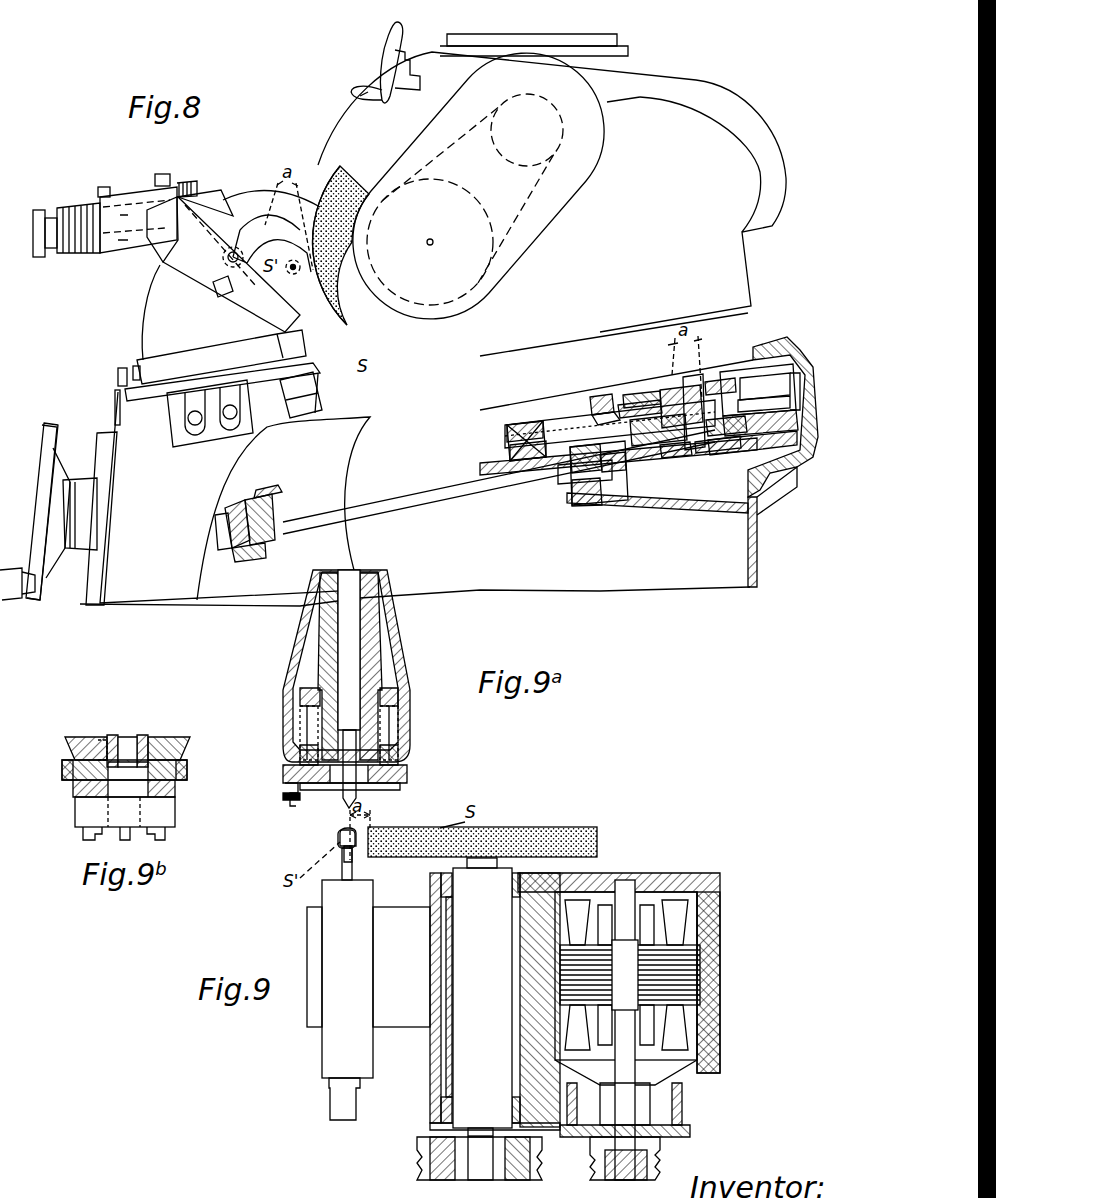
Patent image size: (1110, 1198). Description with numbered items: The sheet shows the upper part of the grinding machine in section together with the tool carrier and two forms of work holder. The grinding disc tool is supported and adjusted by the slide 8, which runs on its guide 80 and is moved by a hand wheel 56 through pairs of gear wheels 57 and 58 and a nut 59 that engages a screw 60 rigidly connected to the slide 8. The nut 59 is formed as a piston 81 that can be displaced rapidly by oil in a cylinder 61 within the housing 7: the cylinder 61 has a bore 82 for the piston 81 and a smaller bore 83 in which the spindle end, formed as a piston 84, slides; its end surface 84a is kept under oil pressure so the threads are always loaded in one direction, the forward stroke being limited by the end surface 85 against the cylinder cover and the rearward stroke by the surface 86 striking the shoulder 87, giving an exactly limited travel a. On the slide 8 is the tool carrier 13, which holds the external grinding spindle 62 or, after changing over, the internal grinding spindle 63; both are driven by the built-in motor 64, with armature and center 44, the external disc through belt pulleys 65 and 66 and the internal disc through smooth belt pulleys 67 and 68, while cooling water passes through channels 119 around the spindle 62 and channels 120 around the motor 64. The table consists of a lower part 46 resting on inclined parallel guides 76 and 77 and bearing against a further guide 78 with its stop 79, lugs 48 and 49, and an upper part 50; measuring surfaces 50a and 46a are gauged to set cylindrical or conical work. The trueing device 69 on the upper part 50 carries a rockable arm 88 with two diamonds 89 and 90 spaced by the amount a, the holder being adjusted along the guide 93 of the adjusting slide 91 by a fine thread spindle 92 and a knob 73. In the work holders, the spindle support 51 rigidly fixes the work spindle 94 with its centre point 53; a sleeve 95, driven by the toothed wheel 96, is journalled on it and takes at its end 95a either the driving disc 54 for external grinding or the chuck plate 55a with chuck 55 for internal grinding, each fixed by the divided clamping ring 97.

In FIG. 8, the spindle tube housing 7 is at (757, 545).
In FIG. 8, the slide 8 is at (750, 315).
In FIG. 8, the tool carrier 13 is at (668, 80).
In FIG. 9, the tool carrier 13 is at (445, 977).
In FIG. 8, the pulley center 44 is at (433, 242).
In FIG. 8, the lower part of the workpiece supporting table 46 is at (125, 394).
In FIG. 8, the measuring surface 46a is at (118, 375).
In FIG. 8, the slotted lug 48 is at (190, 425).
In FIG. 8, the slotted lug 49 is at (230, 418).
In FIG. 8, the upper part of the table 50 is at (140, 340).
In FIG. 8, the measuring surface 50a is at (133, 372).
In FIG. 8, the spindle support 51 is at (300, 318).
In FIG. 9A, the spindle support 51 is at (405, 730).
In FIG. 9B, the spindle support 51 is at (185, 745).
In FIG. 9A, the centre point 53 is at (345, 800).
In FIG. 9A, the driving disc 54 is at (388, 790).
In FIG. 9B, the chuck 55 is at (175, 812).
In FIG. 9B, the chuck plate 55a is at (175, 782).
In FIG. 8, the hand wheel 56 is at (48, 462).
In FIG. 8, the gear wheels 57 is at (240, 558).
In FIG. 8, the gear wheels 58 is at (582, 398).
In FIG. 8, the nut 59 is at (625, 405).
In FIG. 8, the screw (threaded spindle) 60 is at (555, 410).
In FIG. 8, the cylinder 61 is at (700, 450).
In FIG. 9, the grinding spindle 62 is at (460, 1035).
In FIG. 9, the internal grinding spindle 63 is at (330, 1045).
In FIG. 9, the built-in motor 64 is at (680, 960).
In FIG. 8, the belt pulley 65 is at (560, 148).
In FIG. 9, the belt pulley 65 is at (590, 1162).
In FIG. 8, the belt pulley 66 is at (455, 305).
In FIG. 9, the belt pulley 66 is at (420, 1163).
In FIG. 9, the smooth belt pulley 67 is at (682, 1110).
In FIG. 9, the smooth belt pulley 68 is at (356, 1105).
In FIG. 8, the trueing device 69 is at (150, 260).
In FIG. 8, the hand knob 73 is at (385, 28).
In FIG. 8, the guide 76 is at (149, 403).
In FIG. 8, the guide 77 is at (271, 397).
In FIG. 8, the guide 78 is at (285, 385).
In FIG. 8, the guide member 79 is at (288, 380).
In FIG. 8, the guide 80 is at (790, 345).
In FIG. 8, the piston 81 is at (677, 455).
In FIG. 8, the bore 82 is at (700, 388).
In FIG. 8, the smaller bore 83 is at (765, 385).
In FIG. 8, the piston 84 is at (750, 398).
In FIG. 8, the end surface 84a is at (780, 395).
In FIG. 8, the end surface 85 is at (637, 392).
In FIG. 8, the surface 86 is at (672, 390).
In FIG. 8, the shoulder 87 is at (745, 447).
In FIG. 8, the rockable arm (diamond holder) 88 is at (258, 235).
In FIG. 8, the diamond 89 is at (297, 274).
In FIG. 8, the diamond 90 is at (337, 280).
In FIG. 8, the adjusting slide 91 is at (140, 195).
In FIG. 8, the fine thread spindle 92 is at (115, 250).
In FIG. 8, the guide 93 is at (125, 255).
In FIG. 9A, the work spindle 94 is at (375, 683).
In FIG. 9B, the work spindle 94 is at (110, 745).
In FIG. 9A, the sleeve 95 is at (385, 715).
In FIG. 9B, the sleeve 95 is at (75, 752).
In FIG. 9A, the end of the sleeve 95a is at (395, 758).
In FIG. 9B, the end of the sleeve 95a is at (187, 765).
In FIG. 9A, the toothed wheel 96 is at (395, 702).
In FIG. 9A, the divided clamping ring 97 is at (405, 774).
In FIG. 9B, the divided clamping ring 97 is at (65, 775).
In FIG. 9, the channels 119 is at (446, 915).
In FIG. 9, the channels 120 is at (712, 905).